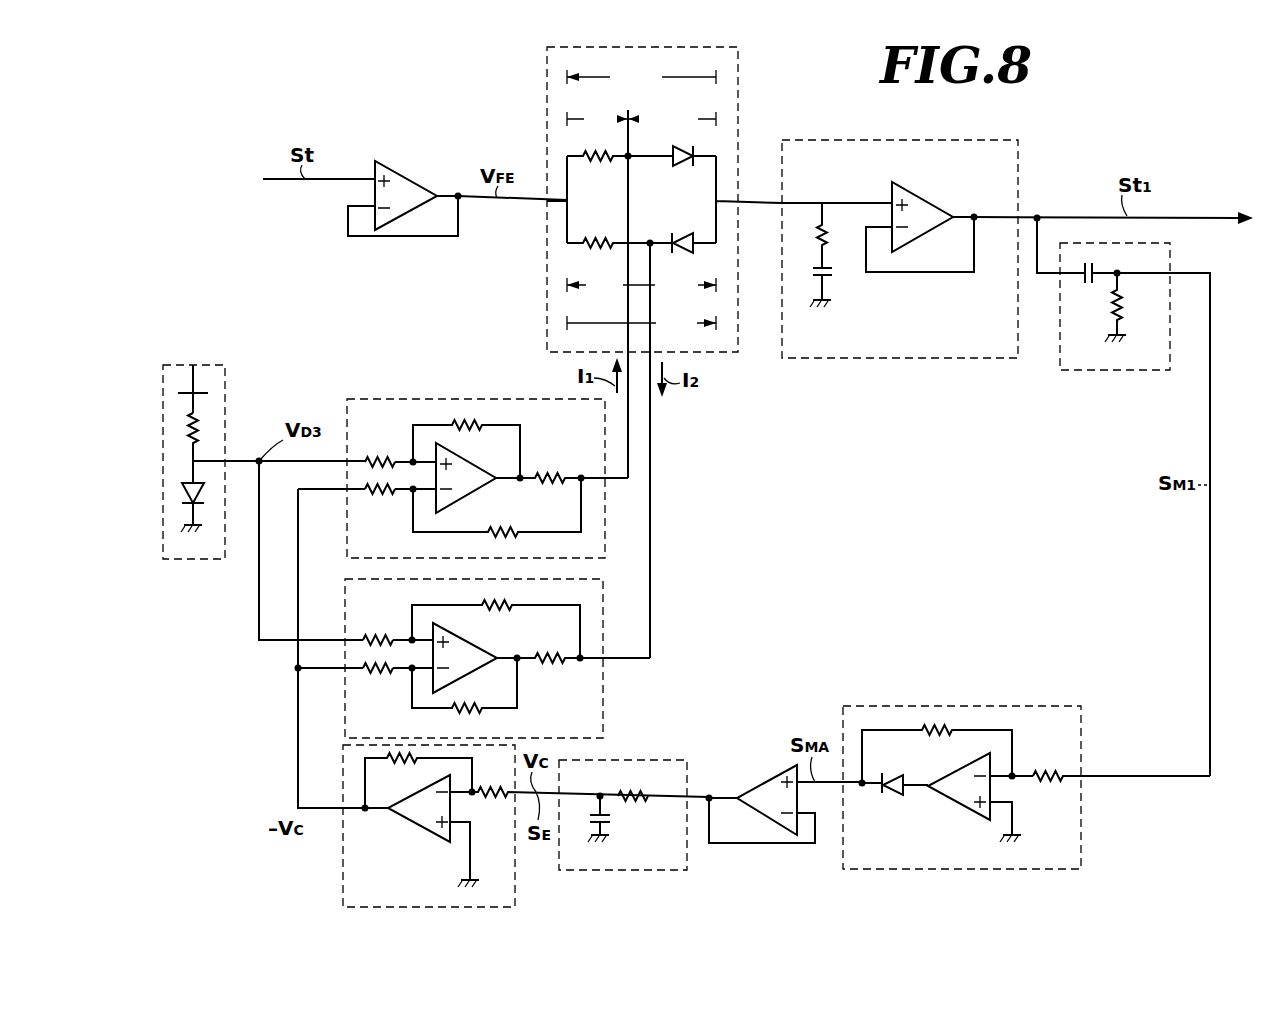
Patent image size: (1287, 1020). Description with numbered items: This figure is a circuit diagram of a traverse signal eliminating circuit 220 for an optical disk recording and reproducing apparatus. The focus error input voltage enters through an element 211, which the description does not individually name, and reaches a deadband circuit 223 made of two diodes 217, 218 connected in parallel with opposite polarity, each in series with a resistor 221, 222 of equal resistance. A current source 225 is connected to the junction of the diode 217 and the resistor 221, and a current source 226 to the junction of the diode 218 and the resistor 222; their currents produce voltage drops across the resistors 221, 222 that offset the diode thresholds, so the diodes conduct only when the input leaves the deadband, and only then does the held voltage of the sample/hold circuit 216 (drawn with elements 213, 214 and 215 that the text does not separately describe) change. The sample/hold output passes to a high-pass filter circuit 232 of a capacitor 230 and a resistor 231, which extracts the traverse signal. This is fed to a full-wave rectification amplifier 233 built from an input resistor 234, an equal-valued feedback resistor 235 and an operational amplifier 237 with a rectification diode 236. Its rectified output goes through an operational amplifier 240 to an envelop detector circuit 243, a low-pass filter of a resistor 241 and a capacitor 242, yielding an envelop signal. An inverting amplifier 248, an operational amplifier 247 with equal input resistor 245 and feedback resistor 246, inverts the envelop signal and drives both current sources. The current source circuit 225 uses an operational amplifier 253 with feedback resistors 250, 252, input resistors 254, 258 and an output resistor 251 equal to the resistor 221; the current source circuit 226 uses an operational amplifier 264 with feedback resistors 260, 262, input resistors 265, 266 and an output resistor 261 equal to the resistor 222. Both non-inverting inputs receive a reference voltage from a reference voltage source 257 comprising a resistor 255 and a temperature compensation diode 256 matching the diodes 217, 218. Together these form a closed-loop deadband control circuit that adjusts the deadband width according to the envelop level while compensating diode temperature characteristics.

The buffer amplifier 211 is at (406, 178).
The resistor 213 is at (828, 242).
The capacitor 214 is at (830, 280).
The operational amplifier 215 is at (938, 206).
The sample/hold circuit 216 is at (900, 230).
The diode 217 is at (672, 170).
The diode 218 is at (683, 227).
The traverse signal eliminating circuit 220 is at (1233, 868).
The resistor 221 is at (597, 172).
The resistor 222 is at (608, 224).
The deadband circuit 223 is at (676, 352).
The current source circuit 225 is at (525, 457).
The current source circuit 226 is at (501, 658).
The capacitor 230 is at (1085, 284).
The resistor 231 is at (1121, 300).
The high-pass filter circuit 232 is at (1135, 497).
The full-wave rectification amplifier 233 is at (1026, 787).
The input resistor 234 is at (1046, 770).
The feedback resistor 235 is at (932, 735).
The rectification diode 236 is at (890, 800).
The operational amplifier 237 is at (955, 807).
The operational amplifier 240 is at (752, 790).
The resistor 241 is at (633, 802).
The capacitor 242 is at (608, 828).
The envelop detector circuit 243 is at (639, 795).
The input resistor 245 is at (493, 798).
The feedback resistor 246 is at (402, 763).
The operational amplifier 247 is at (413, 823).
The inverting amplifier 248 is at (526, 827).
The feedback resistor 250 is at (473, 420).
The output resistor 251 is at (551, 486).
The feedback resistor 252 is at (470, 496).
The operational amplifier 253 is at (512, 505).
The input resistor 254 is at (380, 457).
The resistor 255 is at (200, 422).
The temperature compensation diode 256 is at (186, 503).
The reference voltage source 257 is at (198, 469).
The resistor 258 is at (380, 494).
The feedback resistor 260 is at (497, 610).
The output resistor 261 is at (548, 655).
The feedback resistor 262 is at (472, 712).
The operational amplifier 264 is at (478, 670).
The input resistor 265 is at (378, 635).
The input resistor 266 is at (378, 673).